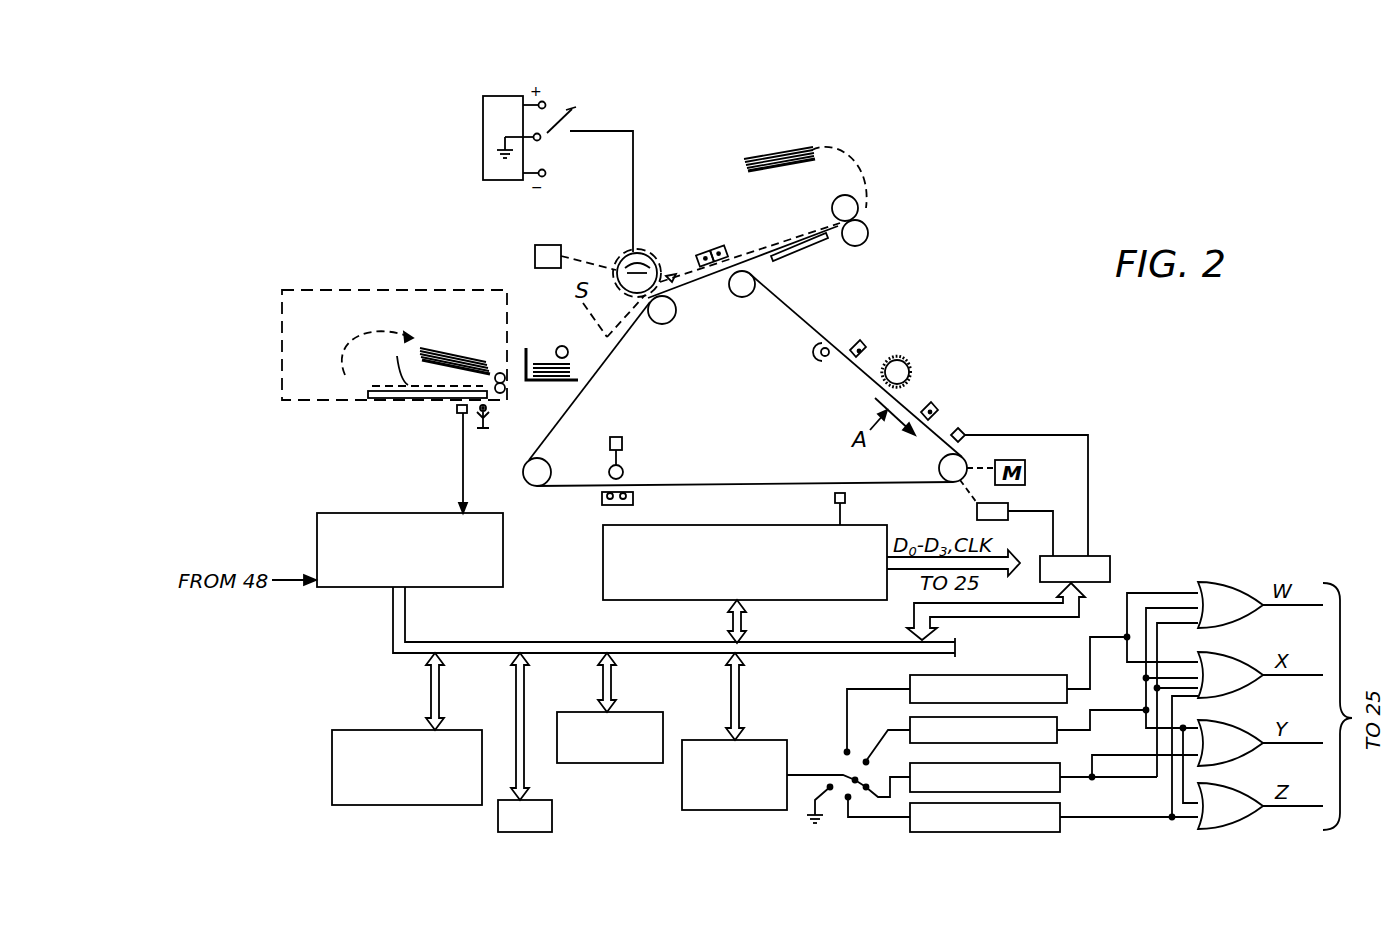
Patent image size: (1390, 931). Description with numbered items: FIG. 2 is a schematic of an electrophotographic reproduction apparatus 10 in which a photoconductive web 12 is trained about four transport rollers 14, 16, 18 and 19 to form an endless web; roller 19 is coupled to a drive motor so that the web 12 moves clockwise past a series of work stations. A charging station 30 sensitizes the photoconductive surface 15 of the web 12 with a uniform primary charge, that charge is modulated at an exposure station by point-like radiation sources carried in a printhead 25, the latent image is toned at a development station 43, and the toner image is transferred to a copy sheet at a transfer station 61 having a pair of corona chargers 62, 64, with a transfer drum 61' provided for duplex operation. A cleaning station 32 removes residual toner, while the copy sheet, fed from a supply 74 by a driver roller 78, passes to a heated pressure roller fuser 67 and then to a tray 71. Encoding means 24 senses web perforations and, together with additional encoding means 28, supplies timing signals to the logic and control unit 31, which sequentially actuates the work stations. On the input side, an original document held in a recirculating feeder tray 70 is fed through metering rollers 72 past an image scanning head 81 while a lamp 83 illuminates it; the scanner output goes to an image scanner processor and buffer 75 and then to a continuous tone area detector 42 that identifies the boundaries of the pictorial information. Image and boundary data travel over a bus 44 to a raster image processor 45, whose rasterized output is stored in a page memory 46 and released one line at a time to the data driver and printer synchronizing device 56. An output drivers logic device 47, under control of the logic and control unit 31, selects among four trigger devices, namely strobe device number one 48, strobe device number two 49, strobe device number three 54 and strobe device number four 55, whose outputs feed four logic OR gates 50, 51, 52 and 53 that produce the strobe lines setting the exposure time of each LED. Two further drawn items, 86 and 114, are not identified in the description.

The electrophotographic reproduction apparatus 10 is at (942, 326).
The photoconductive web 12 is at (822, 318).
The transport roller 14 is at (742, 297).
The photoconductive surface 15 is at (790, 297).
The transport roller 16 is at (665, 325).
The transport roller 18 is at (537, 486).
The transport roller 19 is at (938, 466).
The encoding means 24 is at (963, 430).
The printhead 25 is at (835, 498).
The encoding means 28 is at (1008, 507).
The charging station 30 is at (938, 405).
The logic and control unit 31 is at (1110, 570).
The cleaning station 32 is at (915, 366).
The continuous tone area detector 42 is at (332, 742).
The development station 43 is at (633, 497).
The bus 44 is at (507, 643).
The raster image processor 45 is at (497, 822).
The page memory 46 is at (590, 763).
The output drivers logic device 47 is at (682, 810).
The strobe device #1 48 is at (910, 722).
The strobe device #2 49 is at (912, 757).
The logic OR gate 50 is at (1260, 605).
The logic OR gate 51 is at (1260, 675).
The logic OR gate 52 is at (622, 440).
The logic OR gate 53 is at (1260, 806).
The strobe device #3 54 is at (980, 675).
The strobe device #4 55 is at (910, 828).
The data driver and printer synchronizing device 56 is at (640, 600).
The transfer station 61 is at (727, 230).
The transfer drum 61' is at (643, 253).
The corona charger 62 is at (700, 247).
The corona charger 64 is at (735, 250).
The heated pressure roller fuser 67 is at (870, 232).
The recirculating feeder tray 70 is at (348, 290).
The tray 71 is at (772, 172).
The metering rollers 72 is at (505, 390).
The supply 74 is at (528, 348).
The image scanner processor and buffer 75 is at (503, 575).
The driver roller 78 is at (562, 346).
The image scanning head 81 is at (456, 414).
The lamp 83 is at (490, 415).
The roller 86 is at (623, 470).
The document stack 114 is at (494, 362).